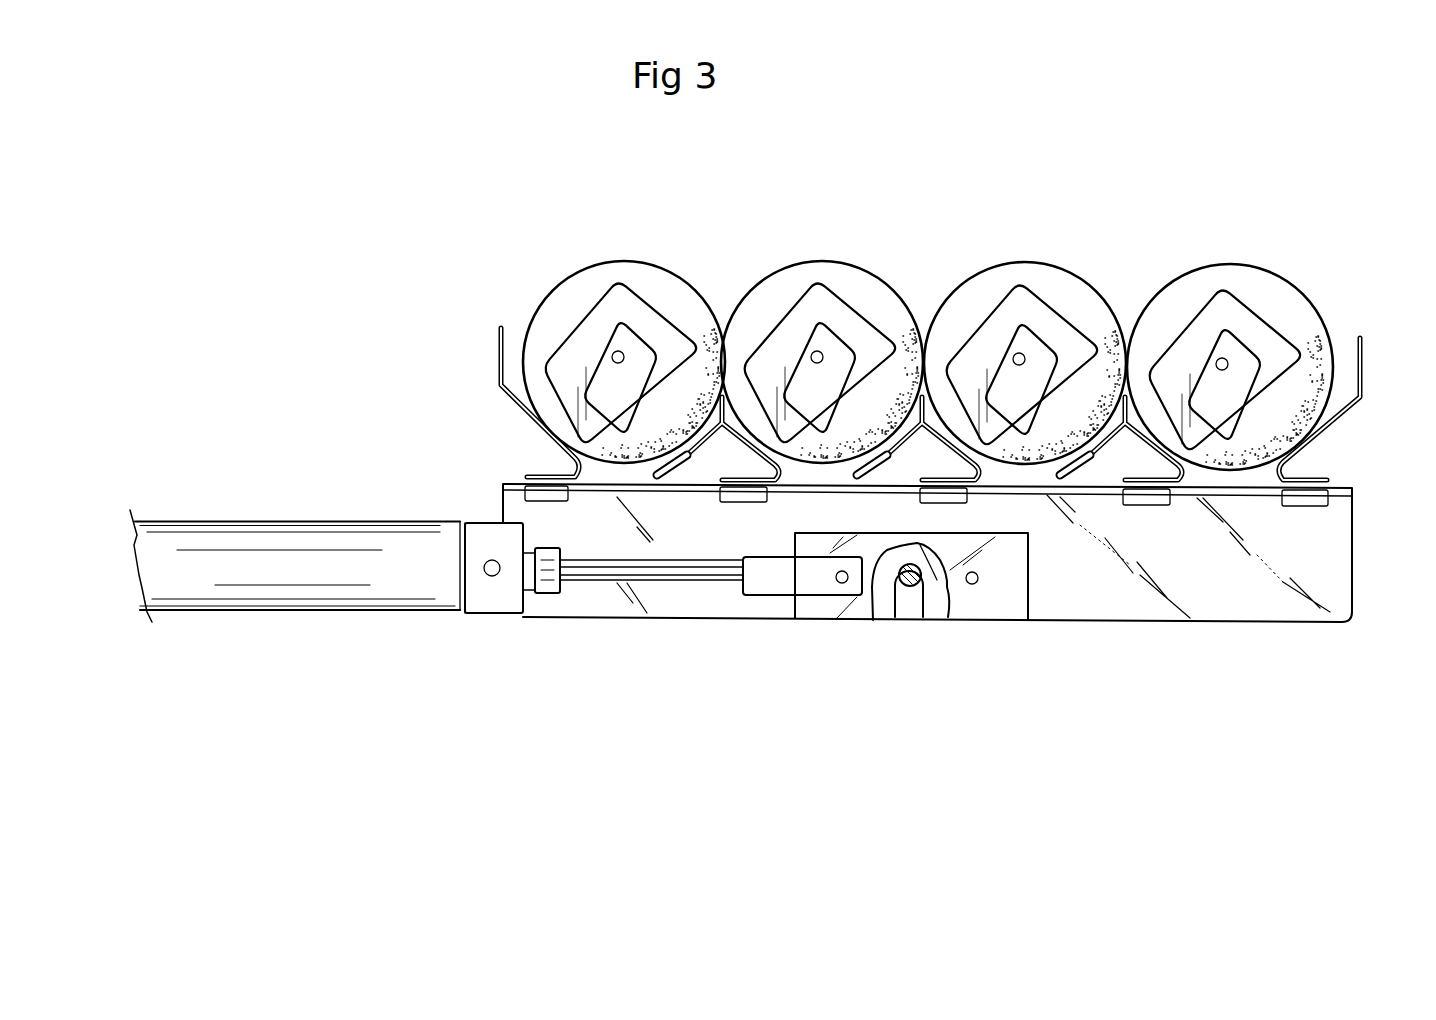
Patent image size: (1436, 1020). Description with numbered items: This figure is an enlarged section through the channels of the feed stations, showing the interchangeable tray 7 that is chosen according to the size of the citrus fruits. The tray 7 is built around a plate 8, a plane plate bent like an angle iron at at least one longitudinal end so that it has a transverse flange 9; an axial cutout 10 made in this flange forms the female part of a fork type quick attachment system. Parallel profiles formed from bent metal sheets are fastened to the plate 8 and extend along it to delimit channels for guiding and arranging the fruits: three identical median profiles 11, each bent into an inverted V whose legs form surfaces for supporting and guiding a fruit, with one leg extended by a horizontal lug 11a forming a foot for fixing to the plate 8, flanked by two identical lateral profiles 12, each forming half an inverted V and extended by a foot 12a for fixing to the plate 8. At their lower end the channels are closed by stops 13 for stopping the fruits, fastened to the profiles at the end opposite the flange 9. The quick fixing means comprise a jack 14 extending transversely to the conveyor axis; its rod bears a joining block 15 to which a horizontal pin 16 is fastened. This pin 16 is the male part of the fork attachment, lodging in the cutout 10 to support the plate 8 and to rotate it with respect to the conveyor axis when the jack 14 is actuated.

The tray 7 is at (1340, 460).
The plate 8 is at (1375, 578).
The transverse flange 9 is at (1247, 612).
The axial cutout 10 is at (905, 617).
The median profile 11 is at (1122, 432).
The horizontal lug 11a is at (745, 476).
The lateral profile 12 is at (497, 397).
The foot 12a is at (537, 467).
The stop 13 is at (788, 322).
The jack 14 is at (430, 590).
The joining block 15 is at (812, 598).
The horizontal pin 16 is at (931, 612).